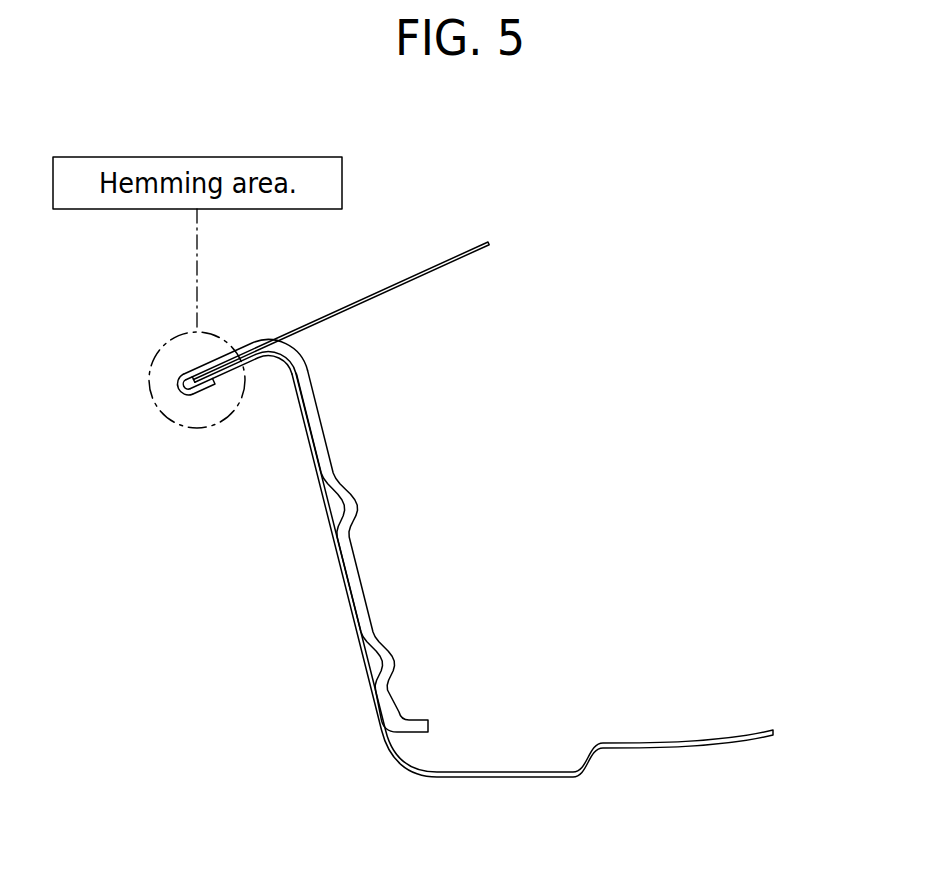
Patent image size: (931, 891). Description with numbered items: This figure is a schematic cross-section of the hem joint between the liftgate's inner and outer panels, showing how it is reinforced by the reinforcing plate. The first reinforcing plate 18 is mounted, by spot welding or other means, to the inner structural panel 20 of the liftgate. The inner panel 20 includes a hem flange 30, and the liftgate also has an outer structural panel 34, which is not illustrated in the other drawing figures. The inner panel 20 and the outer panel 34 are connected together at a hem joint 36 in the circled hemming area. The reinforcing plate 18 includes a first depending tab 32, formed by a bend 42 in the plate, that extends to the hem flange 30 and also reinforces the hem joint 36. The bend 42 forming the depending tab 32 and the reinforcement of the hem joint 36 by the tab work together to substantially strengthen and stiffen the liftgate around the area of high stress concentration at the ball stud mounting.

The first reinforcing plate 18 is at (360, 578).
The inner structural panel 20 is at (367, 672).
The hem flange 30 is at (244, 370).
The first depending tab 32 is at (224, 355).
The outer structural panel 34 is at (418, 267).
The hem joint 36 is at (200, 393).
The bend 42 is at (288, 343).